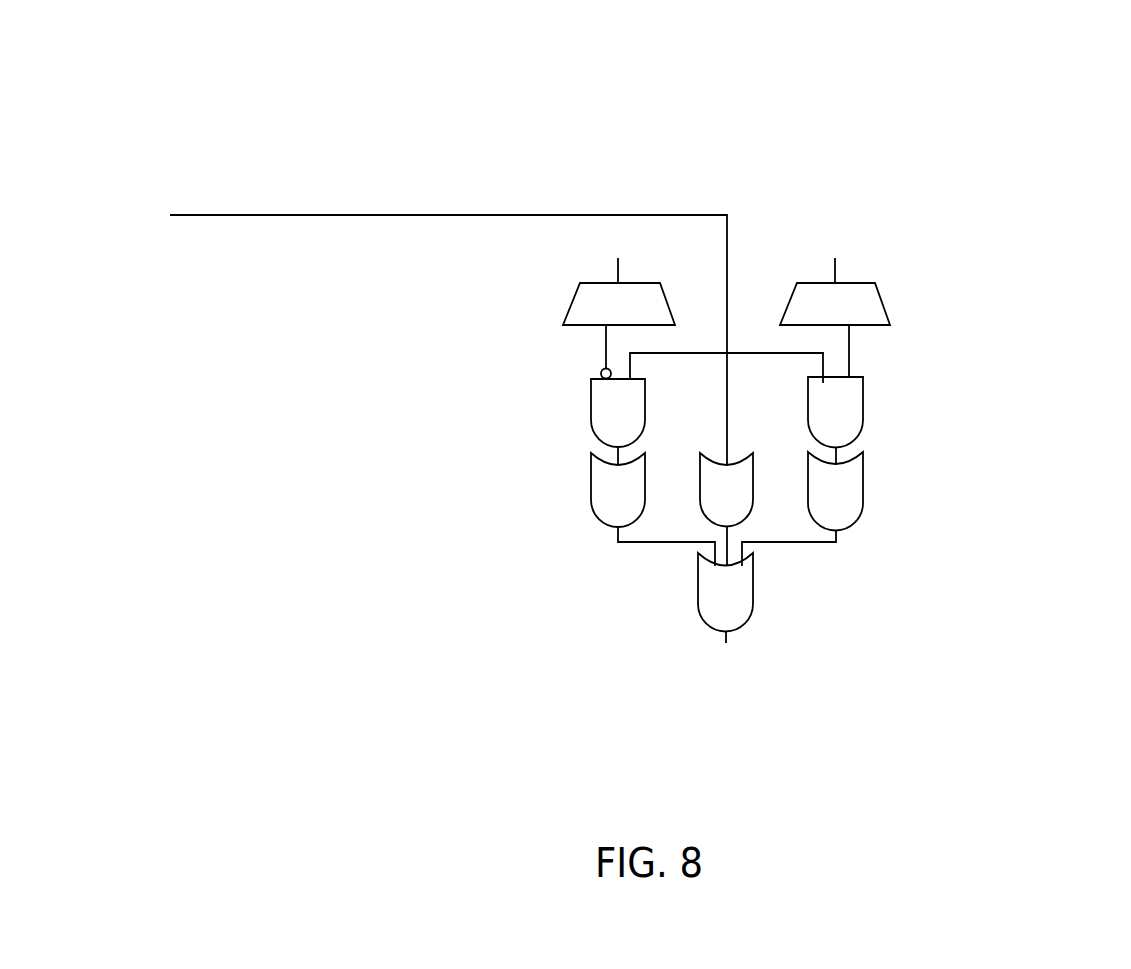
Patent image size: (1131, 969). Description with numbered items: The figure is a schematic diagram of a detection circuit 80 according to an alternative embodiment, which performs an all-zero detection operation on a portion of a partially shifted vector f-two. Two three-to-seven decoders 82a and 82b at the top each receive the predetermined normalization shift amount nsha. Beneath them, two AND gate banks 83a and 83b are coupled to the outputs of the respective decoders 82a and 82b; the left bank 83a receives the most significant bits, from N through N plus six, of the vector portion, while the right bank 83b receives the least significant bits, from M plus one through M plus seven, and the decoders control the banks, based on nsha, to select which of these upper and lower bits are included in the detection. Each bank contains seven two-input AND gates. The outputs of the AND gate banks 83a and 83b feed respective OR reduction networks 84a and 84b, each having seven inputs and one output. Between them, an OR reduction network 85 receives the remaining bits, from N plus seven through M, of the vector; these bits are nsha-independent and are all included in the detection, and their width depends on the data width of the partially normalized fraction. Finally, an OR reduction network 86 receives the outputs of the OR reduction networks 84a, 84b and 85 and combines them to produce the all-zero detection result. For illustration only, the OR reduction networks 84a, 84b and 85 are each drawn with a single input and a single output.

The detection circuit 80 is at (988, 91).
The 3-to-7 decoder 82a is at (572, 300).
The 3-to-7 decoder 82b is at (878, 300).
The AND gate bank 83a is at (592, 408).
The AND gate bank 83b is at (864, 408).
The OR reduction network 84a is at (592, 490).
The OR reduction network 84b is at (864, 483).
The OR reduction network 85 is at (699, 465).
The OR reduction network 86 is at (754, 610).